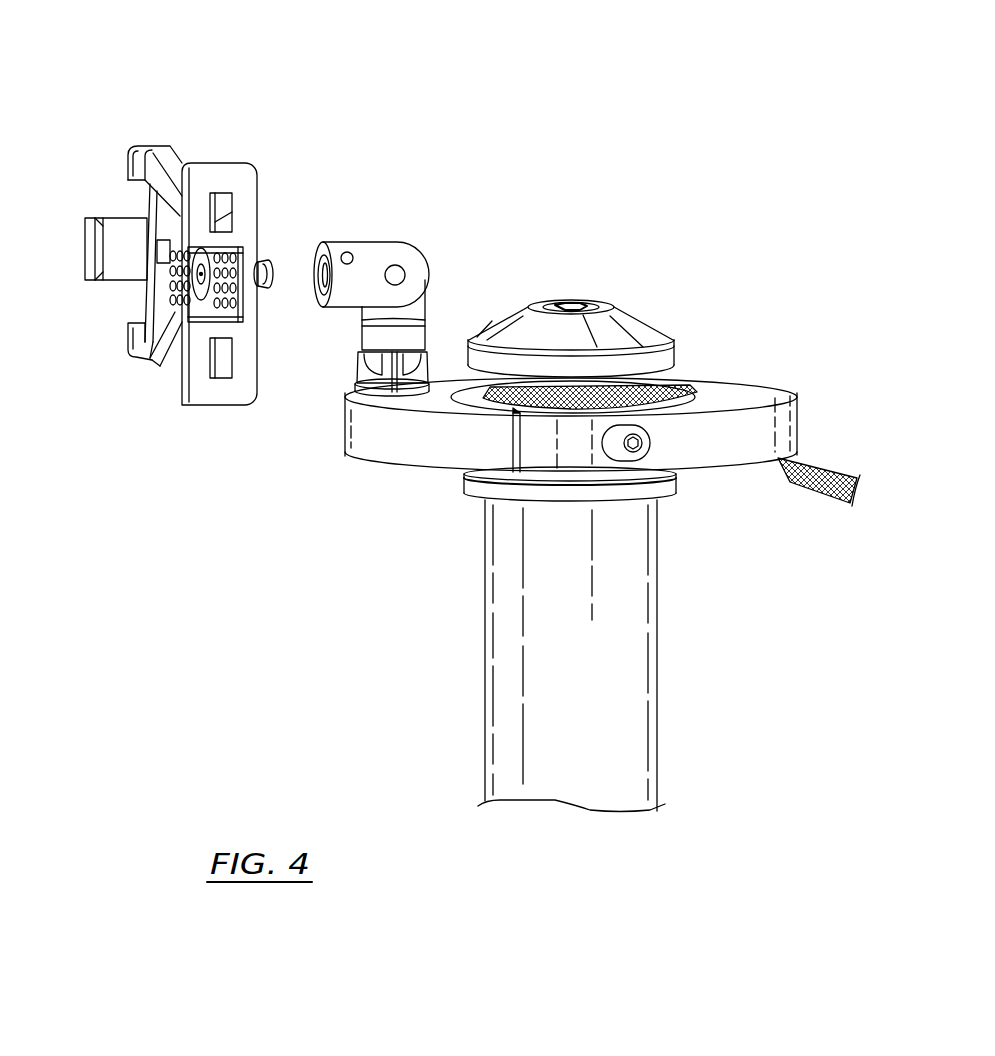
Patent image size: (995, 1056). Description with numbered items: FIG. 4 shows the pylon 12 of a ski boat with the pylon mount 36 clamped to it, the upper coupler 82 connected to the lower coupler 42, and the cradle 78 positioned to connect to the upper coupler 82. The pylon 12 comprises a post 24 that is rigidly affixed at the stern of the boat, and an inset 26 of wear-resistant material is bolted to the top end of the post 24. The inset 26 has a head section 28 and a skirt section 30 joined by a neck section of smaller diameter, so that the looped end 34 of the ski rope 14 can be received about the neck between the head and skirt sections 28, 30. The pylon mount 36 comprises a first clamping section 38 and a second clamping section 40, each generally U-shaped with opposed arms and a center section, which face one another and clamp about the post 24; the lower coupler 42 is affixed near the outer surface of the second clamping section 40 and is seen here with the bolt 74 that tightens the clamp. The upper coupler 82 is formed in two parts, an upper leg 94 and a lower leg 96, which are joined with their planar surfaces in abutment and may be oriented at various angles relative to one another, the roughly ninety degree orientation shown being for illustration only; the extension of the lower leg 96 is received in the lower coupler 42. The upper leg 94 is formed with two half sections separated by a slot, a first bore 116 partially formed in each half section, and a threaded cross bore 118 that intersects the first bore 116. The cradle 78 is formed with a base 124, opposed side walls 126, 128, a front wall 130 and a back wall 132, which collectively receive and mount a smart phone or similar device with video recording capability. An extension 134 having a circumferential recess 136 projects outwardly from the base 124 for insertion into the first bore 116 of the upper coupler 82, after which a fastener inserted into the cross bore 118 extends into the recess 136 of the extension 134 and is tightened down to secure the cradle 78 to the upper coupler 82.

The pylon 12 is at (427, 660).
The ski rope 14 is at (827, 478).
The post 24 is at (660, 688).
The inset 26 is at (706, 287).
The head section 28 is at (623, 306).
The skirt section 30 is at (673, 493).
The looped end 34 is at (688, 372).
The pylon mount 36 is at (794, 348).
The first clamping section 38 is at (745, 437).
The second clamping section 40 is at (380, 441).
The lower coupler 42 is at (335, 382).
The clamp bolt 74 is at (662, 443).
The cradle 78 is at (236, 101).
The upper coupler 82 is at (448, 246).
The upper leg 94 is at (385, 232).
The lower leg 96 is at (435, 326).
The first bore 116 is at (322, 272).
The cross bore 118 is at (347, 252).
The base 124 is at (177, 281).
The side wall 126 is at (160, 145).
The side wall 128 is at (167, 367).
The front wall 130 is at (247, 205).
The back wall 132 is at (104, 217).
The extension 134 is at (268, 292).
The circumferential recess 136 is at (262, 262).